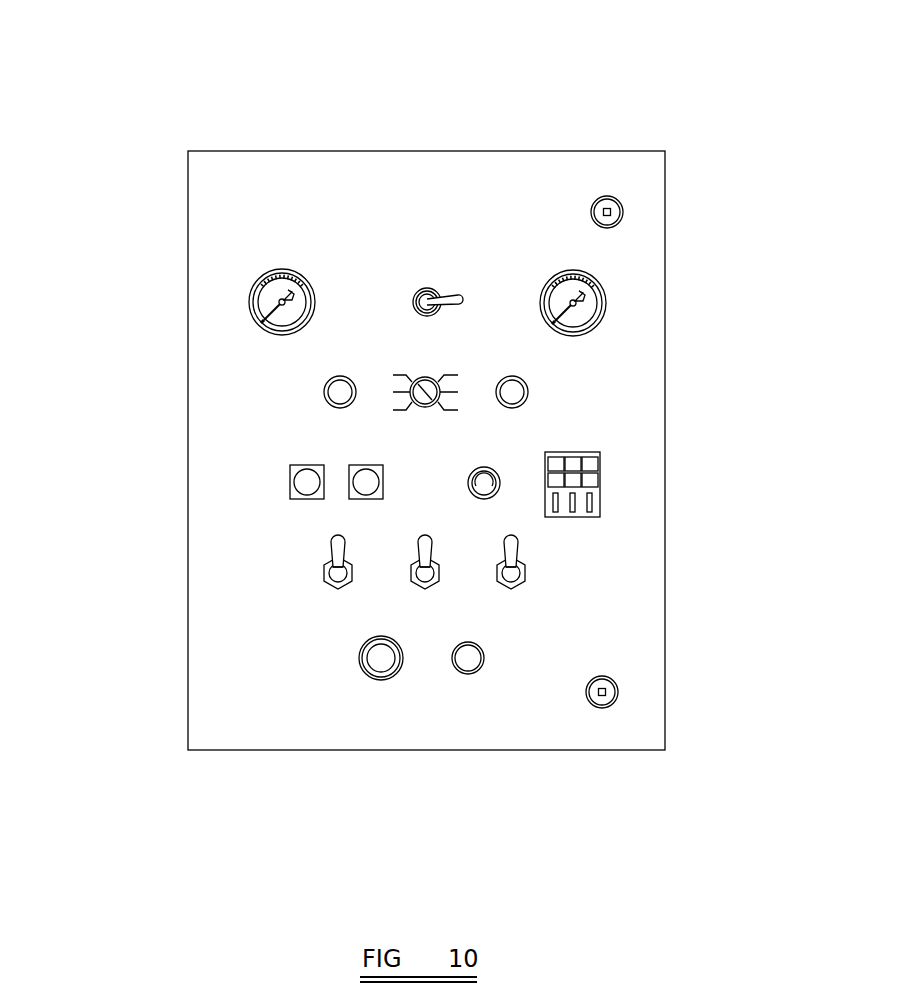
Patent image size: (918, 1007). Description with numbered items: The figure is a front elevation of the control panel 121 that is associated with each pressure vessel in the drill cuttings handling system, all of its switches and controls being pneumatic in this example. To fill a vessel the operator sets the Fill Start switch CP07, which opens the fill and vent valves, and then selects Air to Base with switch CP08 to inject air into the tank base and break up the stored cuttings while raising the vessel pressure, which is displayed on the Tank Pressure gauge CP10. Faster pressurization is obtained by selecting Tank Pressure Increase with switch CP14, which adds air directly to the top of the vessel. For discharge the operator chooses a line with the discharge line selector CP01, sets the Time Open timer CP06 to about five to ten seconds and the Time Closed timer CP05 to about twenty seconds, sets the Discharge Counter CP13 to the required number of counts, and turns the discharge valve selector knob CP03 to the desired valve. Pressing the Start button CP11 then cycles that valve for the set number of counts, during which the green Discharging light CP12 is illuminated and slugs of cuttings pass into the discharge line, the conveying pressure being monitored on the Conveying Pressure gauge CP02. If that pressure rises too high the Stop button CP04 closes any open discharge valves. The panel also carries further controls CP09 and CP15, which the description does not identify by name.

The control panel 121 is at (672, 152).
The discharge line selector CP01 is at (425, 288).
The Conveying Pressure gauge CP02 is at (287, 268).
The discharge valve selector knob CP03 is at (416, 377).
The Stop button CP04 is at (324, 391).
The Time Closed timer CP05 is at (356, 466).
The Time Open timer CP06 is at (290, 482).
The Fill Start switch CP07 is at (427, 588).
The Air to Base switch CP08 is at (324, 573).
The push button CP09 is at (383, 680).
The Tank Pressure gauge CP10 is at (567, 272).
The Start button CP11 is at (528, 390).
The Discharging light CP12 is at (497, 472).
The Discharge Counter CP13 is at (602, 487).
The Tank Pressure Increase switch CP14 is at (525, 573).
The indicator lamp CP15 is at (466, 674).